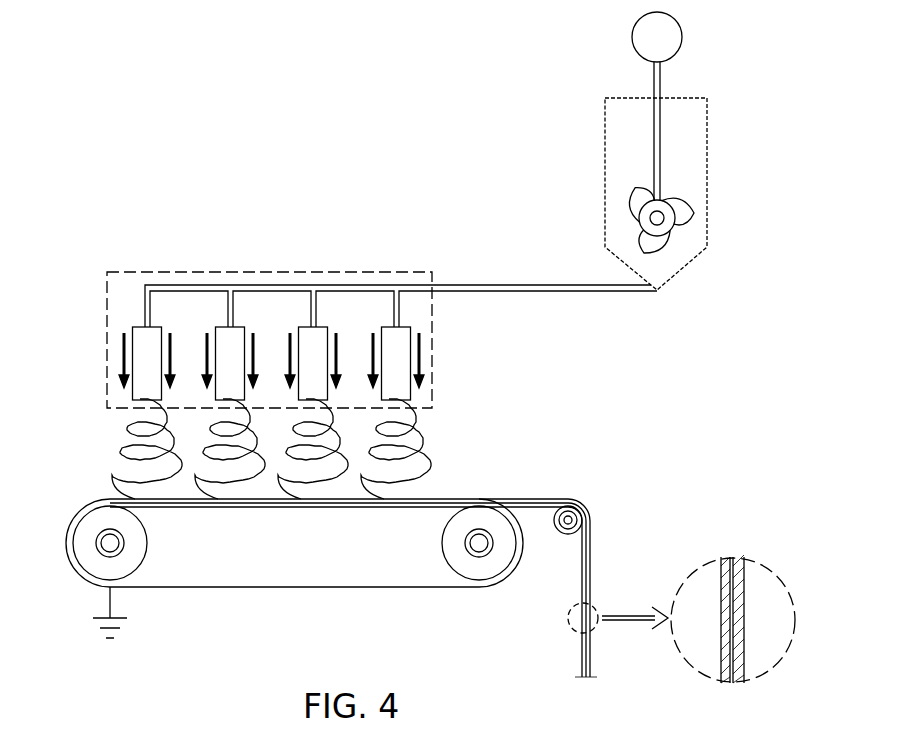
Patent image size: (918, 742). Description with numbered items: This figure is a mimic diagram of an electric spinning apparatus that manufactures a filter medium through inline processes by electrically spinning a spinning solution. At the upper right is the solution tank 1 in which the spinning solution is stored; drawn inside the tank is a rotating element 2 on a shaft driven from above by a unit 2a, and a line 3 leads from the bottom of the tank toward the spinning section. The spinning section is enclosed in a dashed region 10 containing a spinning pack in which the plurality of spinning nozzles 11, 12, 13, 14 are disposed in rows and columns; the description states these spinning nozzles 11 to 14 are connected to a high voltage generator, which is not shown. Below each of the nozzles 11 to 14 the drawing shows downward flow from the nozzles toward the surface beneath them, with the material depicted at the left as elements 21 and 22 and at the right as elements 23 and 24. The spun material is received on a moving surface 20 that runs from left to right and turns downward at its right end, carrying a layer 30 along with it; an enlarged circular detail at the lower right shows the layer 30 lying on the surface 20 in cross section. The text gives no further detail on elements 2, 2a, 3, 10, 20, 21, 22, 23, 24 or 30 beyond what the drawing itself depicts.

The solution tank 1 is at (707, 145).
The agitator 2 is at (700, 210).
The motor 2a is at (683, 37).
The supply pipe 3 is at (484, 284).
The nozzle unit 10 is at (105, 331).
The spinning nozzle 11 is at (137, 325).
The spinning nozzle 12 is at (221, 325).
The spinning nozzle 13 is at (304, 325).
The spinning nozzle 14 is at (387, 325).
The conveyor belt 20 is at (533, 497).
The first coiled fiber 21 is at (115, 473).
The second coiled fiber 22 is at (128, 438).
The third coiled fiber 23 is at (420, 431).
The fourth coiled fiber 24 is at (432, 468).
The sheet 30 is at (190, 501).